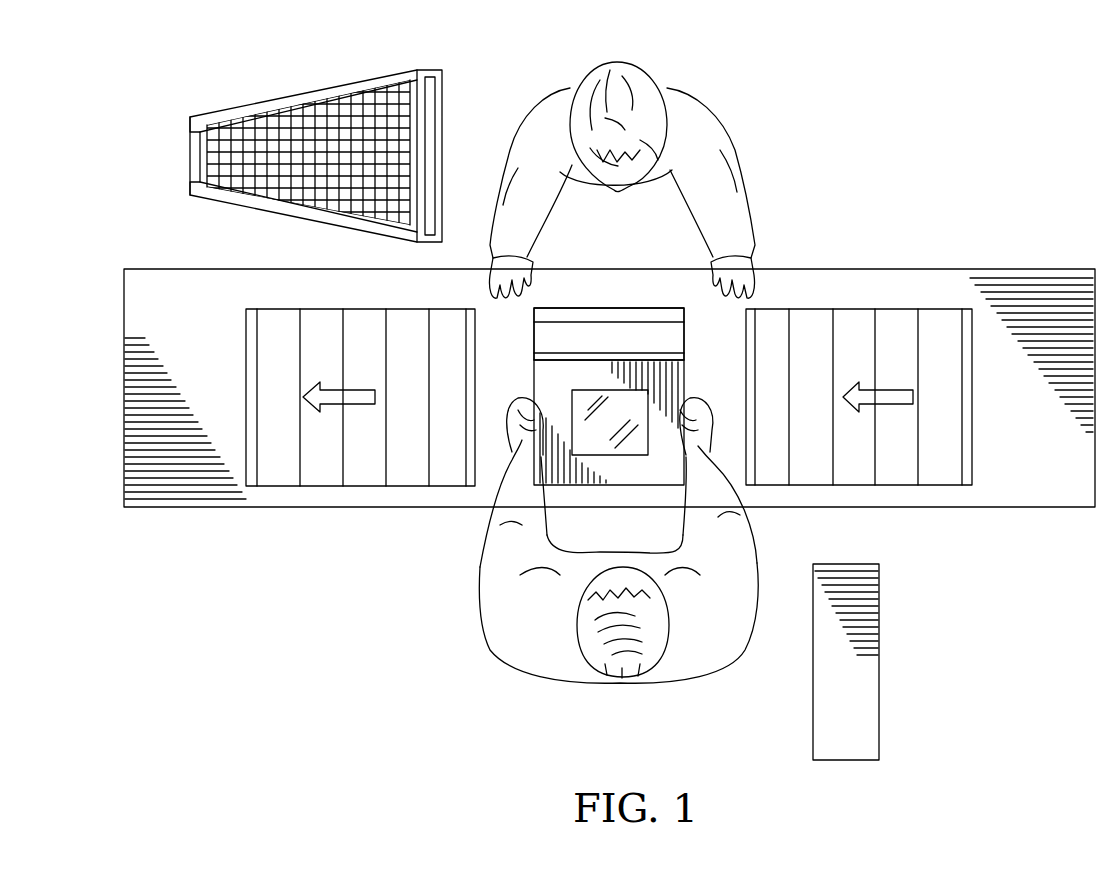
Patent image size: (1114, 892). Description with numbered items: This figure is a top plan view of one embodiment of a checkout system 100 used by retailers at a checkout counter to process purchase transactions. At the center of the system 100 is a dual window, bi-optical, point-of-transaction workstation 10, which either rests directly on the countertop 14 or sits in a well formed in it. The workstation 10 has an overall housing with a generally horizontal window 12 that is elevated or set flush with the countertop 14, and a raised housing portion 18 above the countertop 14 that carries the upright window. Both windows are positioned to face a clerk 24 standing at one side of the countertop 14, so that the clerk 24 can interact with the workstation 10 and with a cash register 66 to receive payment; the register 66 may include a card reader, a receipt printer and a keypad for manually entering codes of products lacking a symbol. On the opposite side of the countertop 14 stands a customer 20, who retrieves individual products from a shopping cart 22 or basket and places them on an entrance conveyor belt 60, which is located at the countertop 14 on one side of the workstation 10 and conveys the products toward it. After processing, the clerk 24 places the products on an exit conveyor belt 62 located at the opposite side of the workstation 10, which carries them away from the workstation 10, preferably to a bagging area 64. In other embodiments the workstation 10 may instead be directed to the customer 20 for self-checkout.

The system 100 is at (860, 59).
The point-of-transaction workstation 10 is at (548, 447).
The horizontal window 12 is at (633, 447).
The countertop 14 is at (1037, 283).
The raised housing portion 18 is at (538, 341).
The customer 20 is at (613, 62).
The shopping cart 22 is at (311, 94).
The clerk 24 is at (483, 612).
The entrance conveyor belt 60 is at (863, 323).
The exit conveyor belt 62 is at (325, 325).
The bagging area 64 is at (142, 338).
The cash register 66 is at (879, 658).